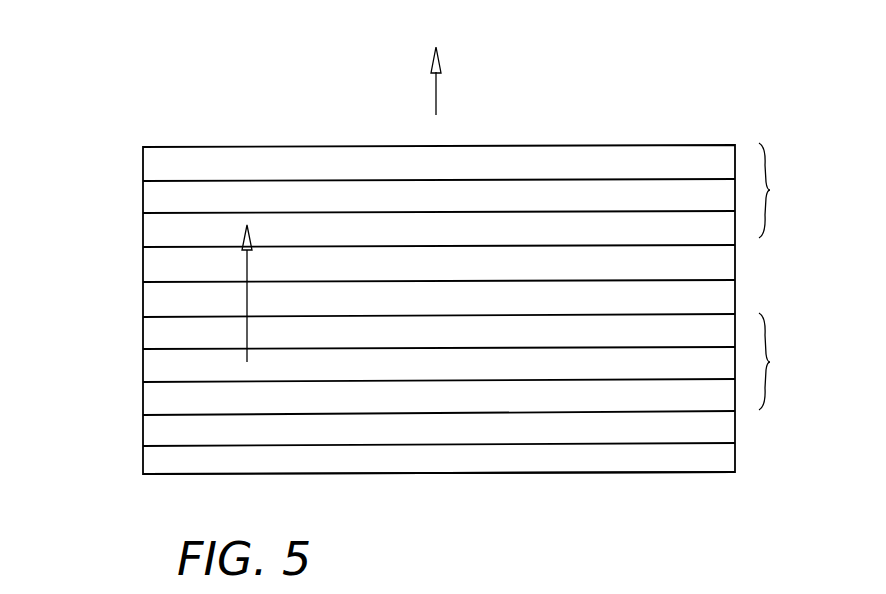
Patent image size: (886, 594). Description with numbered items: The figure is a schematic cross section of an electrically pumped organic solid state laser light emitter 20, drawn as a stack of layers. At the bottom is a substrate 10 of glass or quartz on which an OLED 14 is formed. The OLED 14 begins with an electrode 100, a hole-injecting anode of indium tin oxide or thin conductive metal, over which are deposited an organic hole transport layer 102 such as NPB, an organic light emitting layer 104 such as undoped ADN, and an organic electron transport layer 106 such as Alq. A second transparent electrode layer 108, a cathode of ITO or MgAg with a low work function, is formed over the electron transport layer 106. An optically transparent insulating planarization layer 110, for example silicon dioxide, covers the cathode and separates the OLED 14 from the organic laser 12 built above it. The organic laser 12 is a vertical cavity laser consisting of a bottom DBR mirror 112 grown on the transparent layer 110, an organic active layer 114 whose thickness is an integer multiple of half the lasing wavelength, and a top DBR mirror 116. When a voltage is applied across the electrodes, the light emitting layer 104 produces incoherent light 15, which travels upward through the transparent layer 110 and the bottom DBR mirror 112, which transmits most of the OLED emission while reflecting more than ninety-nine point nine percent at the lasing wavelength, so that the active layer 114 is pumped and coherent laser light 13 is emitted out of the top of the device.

The substrate 10 is at (153, 462).
The organic laser 12 is at (782, 190).
The laser light 13 is at (442, 66).
The OLED 14 is at (783, 361).
The incoherent light 15 is at (250, 272).
The electrically pumped organic solid state laser light emitter 20 is at (633, 135).
The electrode 100 is at (157, 432).
The hole transport layer 102 is at (157, 405).
The light emitting layer 104 is at (157, 369).
The electron transport layer 106 is at (157, 333).
The transparent electrode layer 108 is at (152, 303).
The transparent layer 110 is at (152, 270).
The bottom DBR mirror 112 is at (152, 233).
The active layer 114 is at (152, 200).
The top DBR mirror 116 is at (152, 163).